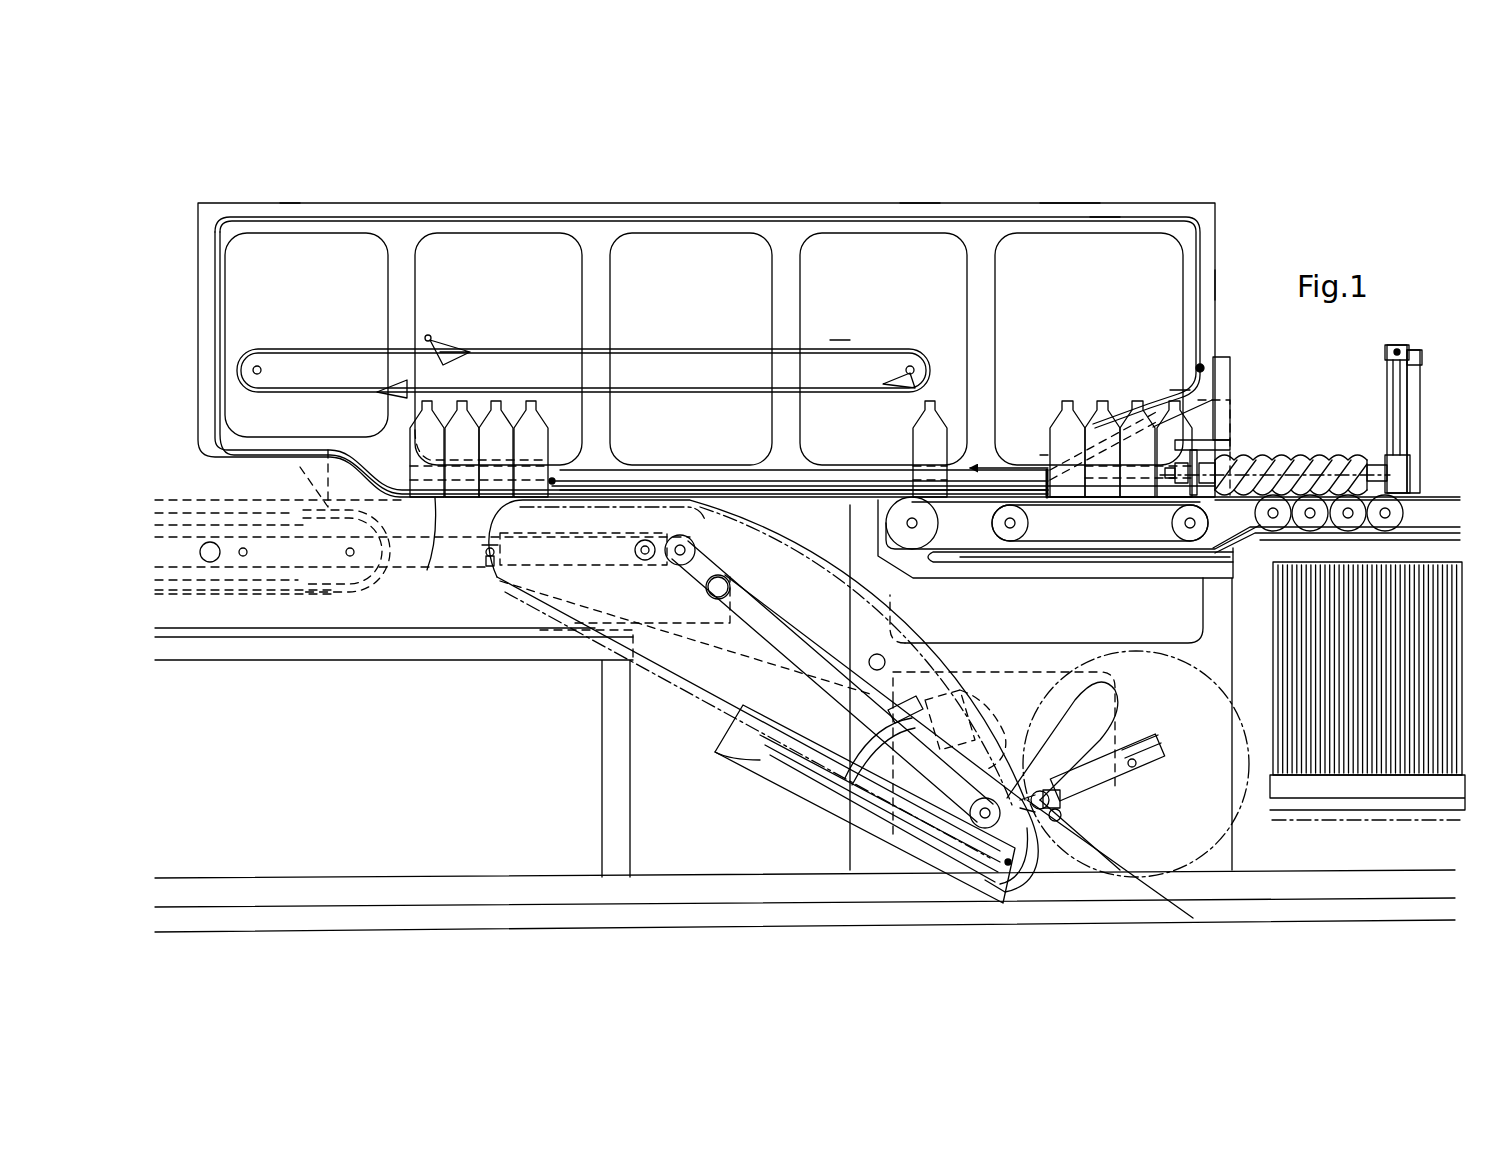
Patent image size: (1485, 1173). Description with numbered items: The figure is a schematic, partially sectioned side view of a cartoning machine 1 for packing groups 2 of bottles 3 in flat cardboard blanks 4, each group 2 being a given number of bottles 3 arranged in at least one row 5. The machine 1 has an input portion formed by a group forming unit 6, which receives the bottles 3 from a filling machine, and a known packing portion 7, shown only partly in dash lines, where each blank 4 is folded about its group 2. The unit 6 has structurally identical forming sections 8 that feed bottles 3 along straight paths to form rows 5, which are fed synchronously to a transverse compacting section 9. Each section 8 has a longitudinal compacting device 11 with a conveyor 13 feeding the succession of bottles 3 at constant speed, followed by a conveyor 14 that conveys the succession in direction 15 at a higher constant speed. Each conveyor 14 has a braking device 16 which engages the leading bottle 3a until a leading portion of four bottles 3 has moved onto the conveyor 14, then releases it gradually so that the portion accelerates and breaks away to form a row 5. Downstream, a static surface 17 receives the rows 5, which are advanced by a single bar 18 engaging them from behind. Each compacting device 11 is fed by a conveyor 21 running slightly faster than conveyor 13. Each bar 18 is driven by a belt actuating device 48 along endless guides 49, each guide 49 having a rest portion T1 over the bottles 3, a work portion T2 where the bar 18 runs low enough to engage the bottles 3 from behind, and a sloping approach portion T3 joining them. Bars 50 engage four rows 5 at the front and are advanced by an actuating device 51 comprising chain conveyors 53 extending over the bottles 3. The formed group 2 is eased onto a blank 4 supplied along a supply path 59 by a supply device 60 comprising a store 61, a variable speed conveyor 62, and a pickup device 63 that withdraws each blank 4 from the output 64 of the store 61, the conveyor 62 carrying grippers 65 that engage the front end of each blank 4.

The cartoning machine 1 is at (290, 185).
The group 2 is at (492, 380).
The bottles 3 is at (1103, 395).
The leading bottle 3a is at (1072, 395).
The flat cardboard blank 4 is at (1280, 645).
The row 5 is at (1130, 385).
The group forming unit 6 is at (1258, 270).
The packing portion 7 is at (347, 667).
The forming section 8 is at (1140, 250).
The transverse compacting section 9 is at (838, 330).
The longitudinal compacting device 11 is at (1290, 440).
The conveyor 13 is at (1320, 455).
The conveyor 14 is at (1025, 450).
The direction 15 is at (985, 465).
The braking device 16 is at (1108, 565).
The static surface 17 is at (810, 490).
The bar 18 is at (1203, 366).
The conveyor 21 is at (1442, 487).
The belt actuating device 48 is at (1045, 195).
The endless guide 49 is at (1105, 217).
The bar 50 is at (927, 385).
The actuating device 51 is at (756, 342).
The chain conveyor 53 is at (664, 350).
The supply path 59 is at (813, 555).
The supply device 60 is at (755, 778).
The store 61 is at (1360, 830).
The conveyor 62 is at (937, 632).
The pickup device 63 is at (1103, 887).
The output 64 is at (1257, 782).
The gripper 65 is at (490, 565).
The rest portion T1 is at (923, 197).
The work portion T2 is at (896, 470).
The approach portion T3 is at (1170, 380).